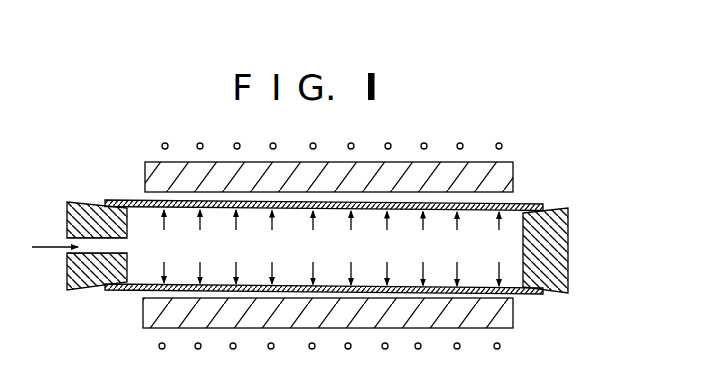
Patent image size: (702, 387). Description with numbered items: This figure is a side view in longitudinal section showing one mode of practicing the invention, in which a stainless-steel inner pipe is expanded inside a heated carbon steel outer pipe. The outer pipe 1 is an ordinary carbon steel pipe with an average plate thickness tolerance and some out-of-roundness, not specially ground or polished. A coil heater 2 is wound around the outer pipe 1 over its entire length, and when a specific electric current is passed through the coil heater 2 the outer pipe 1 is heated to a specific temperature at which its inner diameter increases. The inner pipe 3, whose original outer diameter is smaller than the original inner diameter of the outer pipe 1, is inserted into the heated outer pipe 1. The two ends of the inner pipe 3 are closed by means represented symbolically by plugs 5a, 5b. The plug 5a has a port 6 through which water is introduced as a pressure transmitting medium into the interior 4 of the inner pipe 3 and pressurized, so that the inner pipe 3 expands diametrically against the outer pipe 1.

The outer pipe 1 is at (478, 162).
The coil heater 2 is at (494, 349).
The inner pipe 3 is at (473, 287).
The interior of the inner pipe 4 is at (340, 253).
The plug 5a is at (91, 276).
The plug 5b is at (556, 293).
The port 6 is at (117, 241).